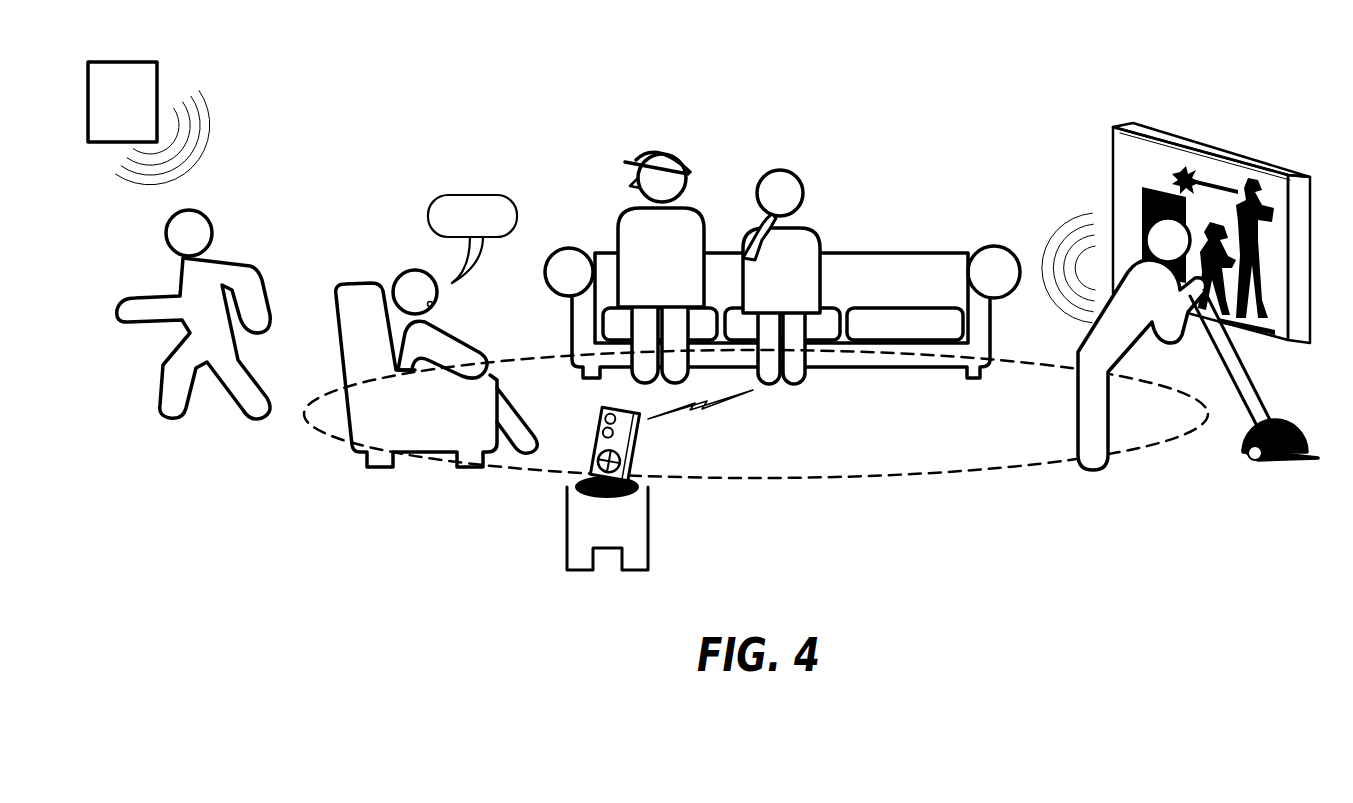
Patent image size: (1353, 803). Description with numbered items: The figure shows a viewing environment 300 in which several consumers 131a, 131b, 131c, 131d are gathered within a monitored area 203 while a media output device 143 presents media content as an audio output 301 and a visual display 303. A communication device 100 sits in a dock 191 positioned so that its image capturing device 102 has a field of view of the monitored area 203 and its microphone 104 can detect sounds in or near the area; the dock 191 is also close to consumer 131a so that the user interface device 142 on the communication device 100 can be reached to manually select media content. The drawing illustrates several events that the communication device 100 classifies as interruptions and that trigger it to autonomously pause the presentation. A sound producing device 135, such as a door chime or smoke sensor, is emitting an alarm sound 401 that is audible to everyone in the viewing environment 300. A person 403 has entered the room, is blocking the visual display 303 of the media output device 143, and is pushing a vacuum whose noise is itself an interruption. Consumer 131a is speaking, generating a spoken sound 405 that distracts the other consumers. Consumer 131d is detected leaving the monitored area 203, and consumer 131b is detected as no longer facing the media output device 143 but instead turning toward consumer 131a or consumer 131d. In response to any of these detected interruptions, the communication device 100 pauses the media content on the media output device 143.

The sound producing device 135 is at (138, 112).
The alarm sound 401 is at (175, 66).
The consumer 131d is at (150, 297).
The consumer 131a is at (408, 352).
The spoken sound 405 is at (462, 194).
The viewing environment 300 is at (559, 94).
The consumer 131b is at (637, 228).
The consumer 131c is at (750, 243).
The monitored area 203 is at (990, 476).
The dock 191 is at (642, 488).
The communication device 100 is at (603, 525).
The image capturing device 102 is at (600, 428).
The microphone 104 is at (609, 440).
The user interface device 142 is at (623, 460).
The audio output 301 is at (1064, 207).
The visual display 303 is at (1173, 220).
The media output device 143 is at (1197, 157).
The person 403 is at (1104, 468).